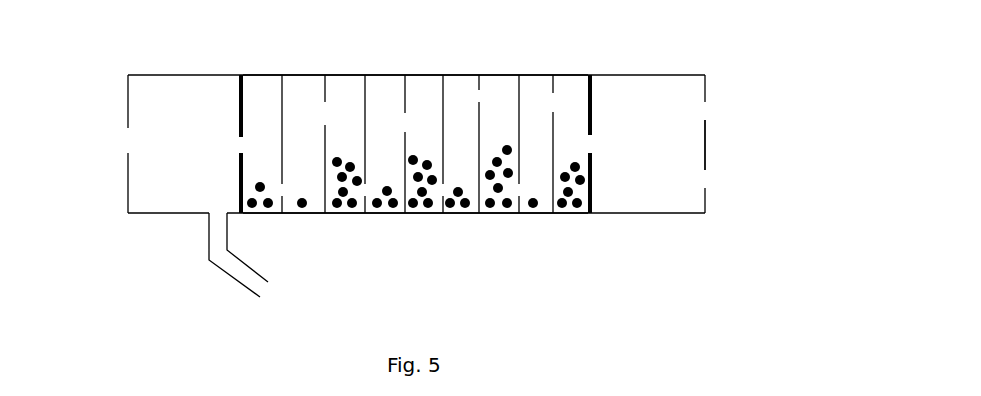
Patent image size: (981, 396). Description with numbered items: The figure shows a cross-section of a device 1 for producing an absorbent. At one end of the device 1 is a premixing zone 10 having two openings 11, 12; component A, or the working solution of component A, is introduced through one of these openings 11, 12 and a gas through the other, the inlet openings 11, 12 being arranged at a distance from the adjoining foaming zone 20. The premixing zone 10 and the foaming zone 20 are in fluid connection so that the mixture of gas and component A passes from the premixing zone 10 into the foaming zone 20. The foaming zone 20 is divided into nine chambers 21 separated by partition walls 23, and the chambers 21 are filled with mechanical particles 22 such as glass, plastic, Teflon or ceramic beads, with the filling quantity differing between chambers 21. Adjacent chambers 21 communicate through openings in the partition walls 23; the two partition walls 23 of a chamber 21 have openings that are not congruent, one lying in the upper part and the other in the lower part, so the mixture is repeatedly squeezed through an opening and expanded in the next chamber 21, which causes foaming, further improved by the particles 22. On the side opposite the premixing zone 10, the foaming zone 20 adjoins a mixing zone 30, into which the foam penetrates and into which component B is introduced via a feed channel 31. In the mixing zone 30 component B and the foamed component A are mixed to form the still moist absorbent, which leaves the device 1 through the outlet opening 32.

The device 1 is at (78, 60).
The premixing zone 10 is at (661, 121).
The opening 11 is at (721, 117).
The opening 12 is at (721, 173).
The foaming zone 20 is at (460, 119).
The chambers 21 is at (388, 87).
The mechanical particles 22 is at (529, 207).
The partition walls 23 is at (323, 126).
The mixing zone 30 is at (197, 118).
The feed channel 31 is at (272, 290).
The outlet opening 32 is at (125, 140).